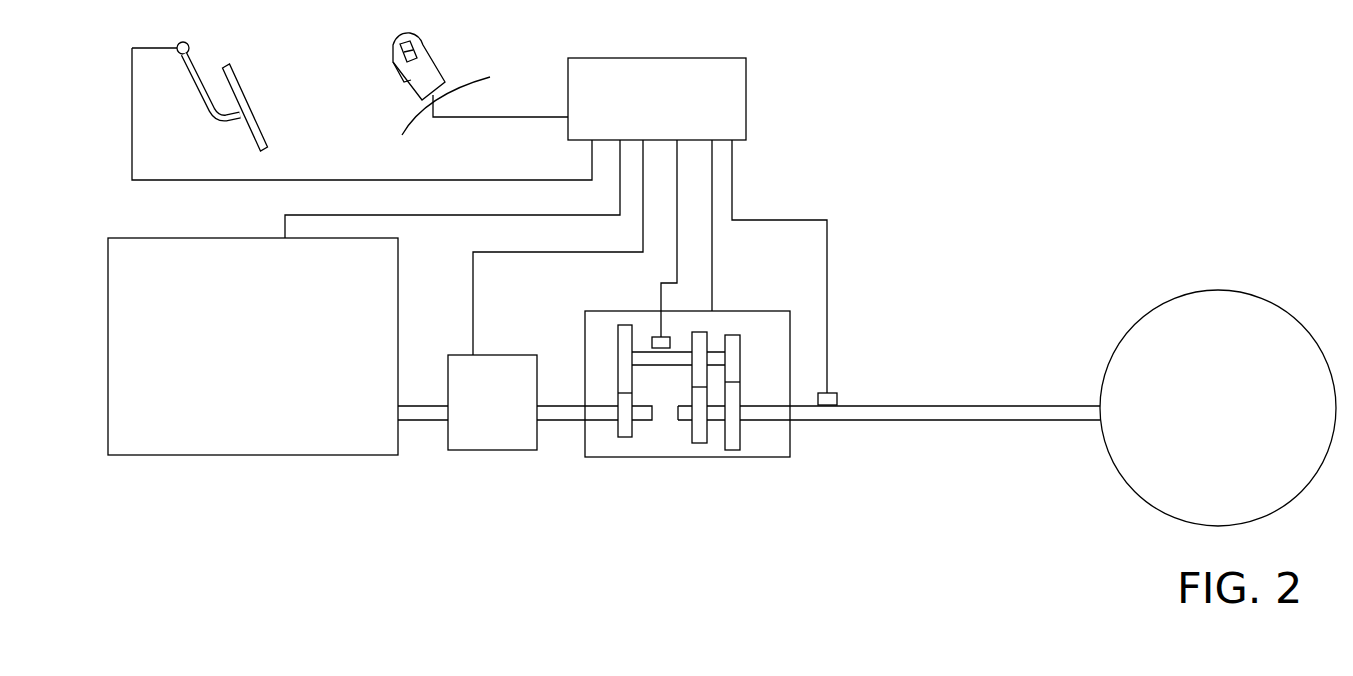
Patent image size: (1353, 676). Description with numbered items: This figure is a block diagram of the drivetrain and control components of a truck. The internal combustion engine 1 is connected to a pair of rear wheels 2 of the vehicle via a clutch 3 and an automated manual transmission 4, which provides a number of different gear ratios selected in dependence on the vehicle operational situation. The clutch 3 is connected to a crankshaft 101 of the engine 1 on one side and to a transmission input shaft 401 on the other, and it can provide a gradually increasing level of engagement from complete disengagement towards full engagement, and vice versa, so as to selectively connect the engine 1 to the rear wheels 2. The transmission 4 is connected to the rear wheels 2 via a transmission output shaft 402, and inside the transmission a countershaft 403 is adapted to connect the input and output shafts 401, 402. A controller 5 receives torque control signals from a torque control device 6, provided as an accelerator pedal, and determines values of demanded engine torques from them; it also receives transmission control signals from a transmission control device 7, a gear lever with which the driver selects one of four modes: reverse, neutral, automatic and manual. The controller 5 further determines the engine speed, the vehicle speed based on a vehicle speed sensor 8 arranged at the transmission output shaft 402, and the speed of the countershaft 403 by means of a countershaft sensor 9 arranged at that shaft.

The internal combustion engine 1 is at (247, 455).
The rear wheels 2 is at (1213, 290).
The clutch 3 is at (492, 450).
The automated manual transmission 4 is at (730, 457).
The controller 5 is at (746, 125).
The torque control device 6 is at (247, 98).
The transmission control device 7 is at (435, 63).
The vehicle speed sensor 8 is at (837, 398).
The countershaft sensor 9 is at (655, 337).
The crankshaft 101 is at (415, 420).
The transmission input shaft 401 is at (557, 421).
The transmission output shaft 402 is at (880, 421).
The countershaft 403 is at (660, 365).